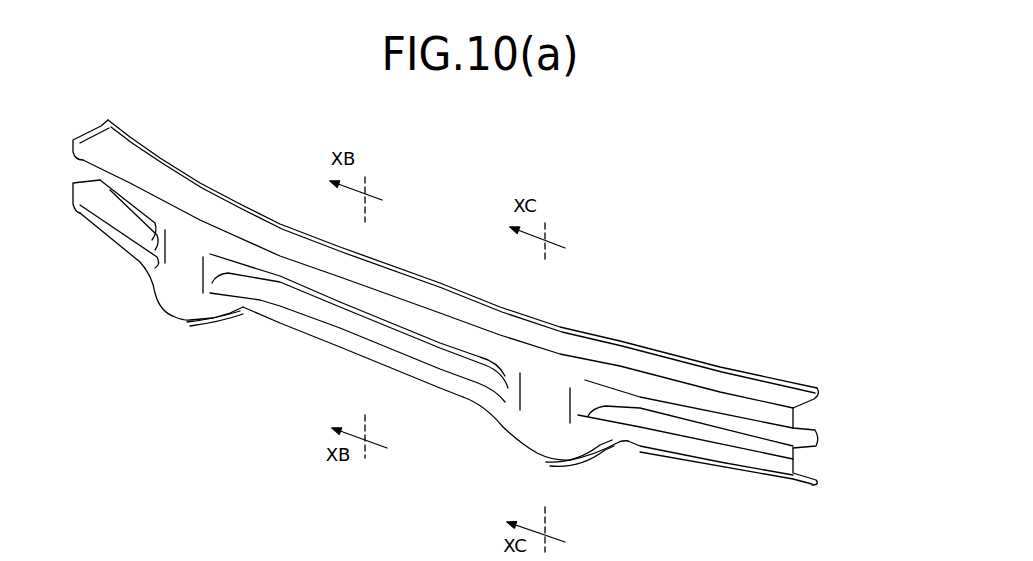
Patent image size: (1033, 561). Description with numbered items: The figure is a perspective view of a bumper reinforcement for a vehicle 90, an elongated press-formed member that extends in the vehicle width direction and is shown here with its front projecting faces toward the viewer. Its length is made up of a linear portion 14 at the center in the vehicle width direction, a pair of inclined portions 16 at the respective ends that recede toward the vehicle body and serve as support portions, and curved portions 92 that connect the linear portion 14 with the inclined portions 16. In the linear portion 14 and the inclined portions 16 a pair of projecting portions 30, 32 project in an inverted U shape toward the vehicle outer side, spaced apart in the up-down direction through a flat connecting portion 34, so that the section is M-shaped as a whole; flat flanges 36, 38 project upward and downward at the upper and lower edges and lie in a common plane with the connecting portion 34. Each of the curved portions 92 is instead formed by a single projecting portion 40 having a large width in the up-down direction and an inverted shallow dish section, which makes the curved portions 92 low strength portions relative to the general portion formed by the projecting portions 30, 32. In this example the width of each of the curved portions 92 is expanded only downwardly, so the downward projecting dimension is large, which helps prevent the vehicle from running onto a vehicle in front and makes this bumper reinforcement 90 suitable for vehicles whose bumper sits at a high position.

The linear portion 14 is at (386, 249).
The inclined portions 16 is at (155, 138).
The projecting portion 30 is at (82, 155).
The projecting portion 32 is at (93, 212).
The connecting portion 34 is at (398, 330).
The flange 36 is at (278, 228).
The flange 38 is at (650, 452).
The projecting portion 40 is at (180, 262).
The bumper reinforcement for a vehicle 90 is at (257, 425).
The curved portions 92 is at (158, 325).